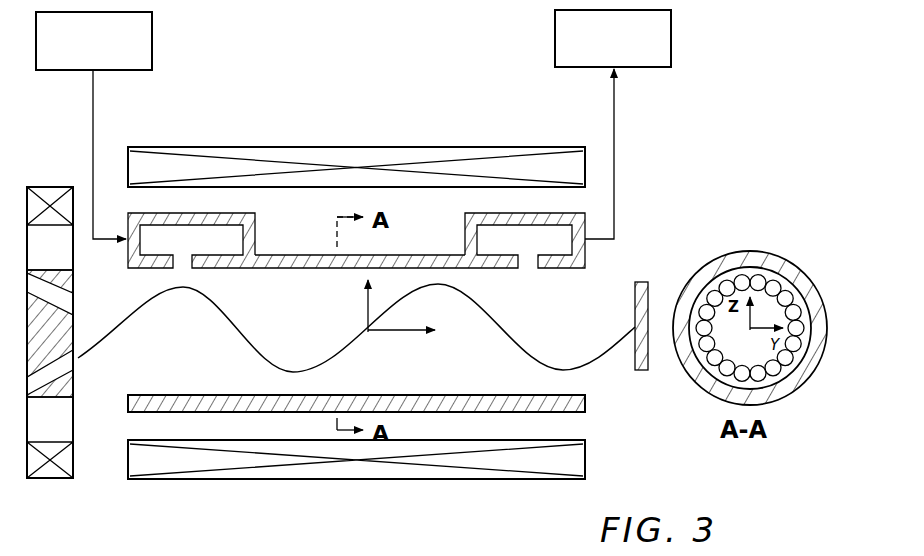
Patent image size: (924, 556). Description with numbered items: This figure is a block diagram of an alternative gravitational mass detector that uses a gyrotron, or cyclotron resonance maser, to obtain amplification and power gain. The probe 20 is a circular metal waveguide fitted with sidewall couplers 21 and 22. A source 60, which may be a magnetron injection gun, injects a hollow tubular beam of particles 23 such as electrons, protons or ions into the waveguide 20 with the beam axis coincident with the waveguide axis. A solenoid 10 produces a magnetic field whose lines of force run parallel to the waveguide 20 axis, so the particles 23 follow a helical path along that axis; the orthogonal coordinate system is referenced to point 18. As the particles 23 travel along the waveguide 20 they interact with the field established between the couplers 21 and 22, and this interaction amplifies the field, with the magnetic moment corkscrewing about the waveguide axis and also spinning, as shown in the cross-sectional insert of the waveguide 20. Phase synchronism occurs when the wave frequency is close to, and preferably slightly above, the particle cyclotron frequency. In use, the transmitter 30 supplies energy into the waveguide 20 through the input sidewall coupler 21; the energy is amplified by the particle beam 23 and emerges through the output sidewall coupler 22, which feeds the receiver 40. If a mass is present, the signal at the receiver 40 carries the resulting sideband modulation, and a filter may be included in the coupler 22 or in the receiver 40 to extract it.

The solenoid 10 is at (401, 147).
The point 18 is at (366, 336).
The probe 20 is at (585, 404).
The input sidewall coupler 21 is at (250, 232).
The output sidewall coupler 22 is at (466, 225).
The beam of particles 23 is at (106, 338).
The transmitter 30 is at (153, 31).
The receiver 40 is at (672, 38).
The source 60 is at (50, 187).